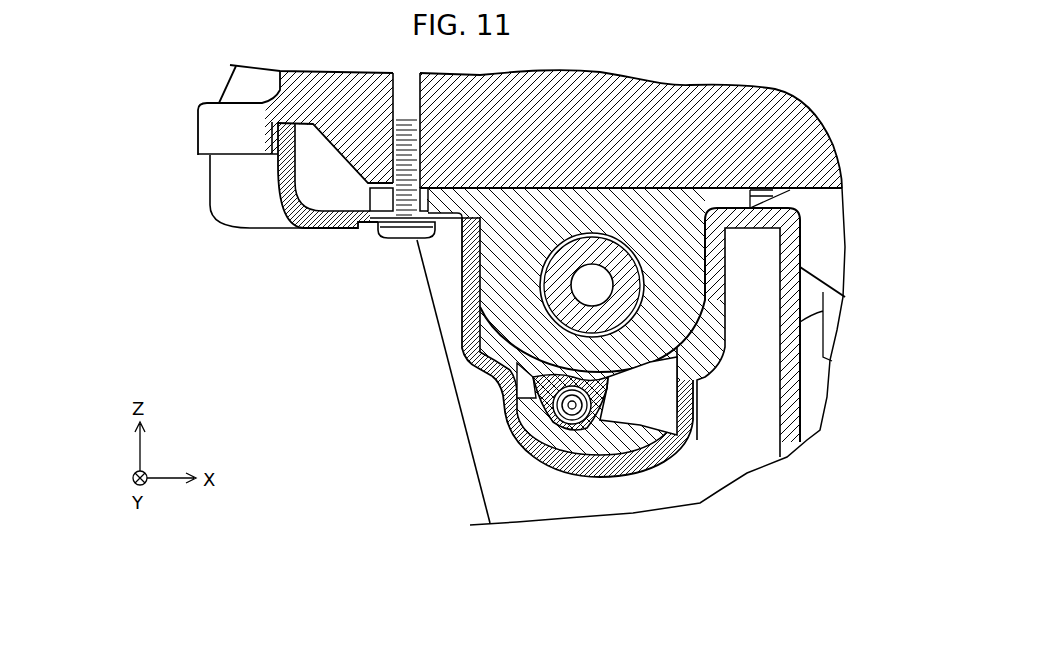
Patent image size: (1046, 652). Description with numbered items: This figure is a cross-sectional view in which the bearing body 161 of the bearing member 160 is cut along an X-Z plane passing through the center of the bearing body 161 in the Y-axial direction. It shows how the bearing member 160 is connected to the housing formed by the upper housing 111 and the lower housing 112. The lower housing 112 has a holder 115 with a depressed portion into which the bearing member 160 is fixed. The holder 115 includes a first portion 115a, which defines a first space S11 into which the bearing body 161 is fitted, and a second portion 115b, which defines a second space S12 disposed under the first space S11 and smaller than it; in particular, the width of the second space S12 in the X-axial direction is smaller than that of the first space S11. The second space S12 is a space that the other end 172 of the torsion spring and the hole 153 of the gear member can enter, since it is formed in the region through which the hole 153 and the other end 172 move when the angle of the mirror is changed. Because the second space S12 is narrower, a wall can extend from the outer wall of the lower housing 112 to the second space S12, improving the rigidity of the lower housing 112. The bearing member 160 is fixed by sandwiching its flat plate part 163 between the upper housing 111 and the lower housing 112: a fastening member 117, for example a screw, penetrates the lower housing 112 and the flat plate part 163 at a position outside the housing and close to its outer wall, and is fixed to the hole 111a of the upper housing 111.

The upper housing 111 is at (265, 127).
The hole 111a is at (403, 160).
The lower housing 112 is at (333, 232).
The holder 115 is at (488, 347).
The first portion 115a is at (462, 315).
The second portion 115b is at (500, 422).
The fastening member 117 is at (402, 240).
The hole 153 is at (553, 428).
The bearing member 160 is at (563, 183).
The bearing body 161 is at (683, 343).
The flat plate part 163 is at (443, 190).
The other end of torsion spring 172 is at (573, 408).
The first space S11 is at (686, 253).
The second space S12 is at (670, 413).